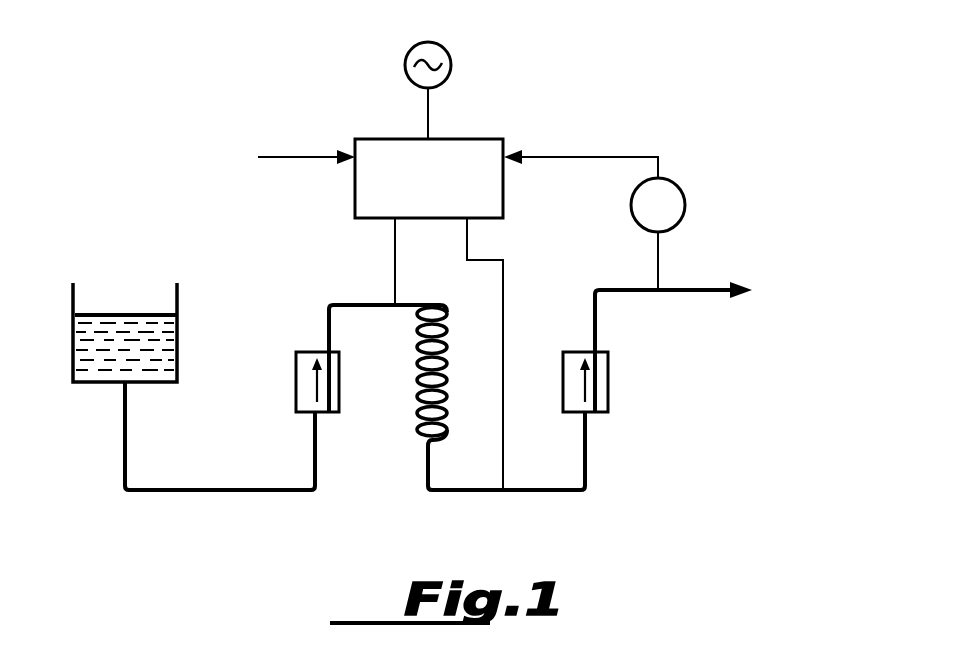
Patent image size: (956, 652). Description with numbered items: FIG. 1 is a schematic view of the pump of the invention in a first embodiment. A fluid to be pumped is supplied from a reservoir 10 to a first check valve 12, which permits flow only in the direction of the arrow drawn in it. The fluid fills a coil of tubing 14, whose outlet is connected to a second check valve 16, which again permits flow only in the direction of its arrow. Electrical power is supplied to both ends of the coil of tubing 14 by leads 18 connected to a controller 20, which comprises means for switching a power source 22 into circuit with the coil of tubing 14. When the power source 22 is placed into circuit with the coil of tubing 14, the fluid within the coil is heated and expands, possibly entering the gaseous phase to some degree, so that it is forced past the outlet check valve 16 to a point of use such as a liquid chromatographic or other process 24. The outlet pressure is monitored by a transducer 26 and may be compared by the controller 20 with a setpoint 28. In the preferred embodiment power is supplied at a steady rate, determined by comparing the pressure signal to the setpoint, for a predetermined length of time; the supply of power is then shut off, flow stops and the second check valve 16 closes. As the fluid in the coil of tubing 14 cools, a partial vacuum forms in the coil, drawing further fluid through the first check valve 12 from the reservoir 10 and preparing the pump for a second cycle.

The reservoir 10 is at (72, 303).
The first check valve 12 is at (304, 384).
The coil of tubing 14 is at (427, 462).
The second check valve 16 is at (600, 390).
The leads 18 is at (467, 238).
The controller 20 is at (478, 152).
The power source 22 is at (438, 50).
The process 24 is at (806, 275).
The transducer 26 is at (676, 190).
The setpoint 28 is at (197, 137).